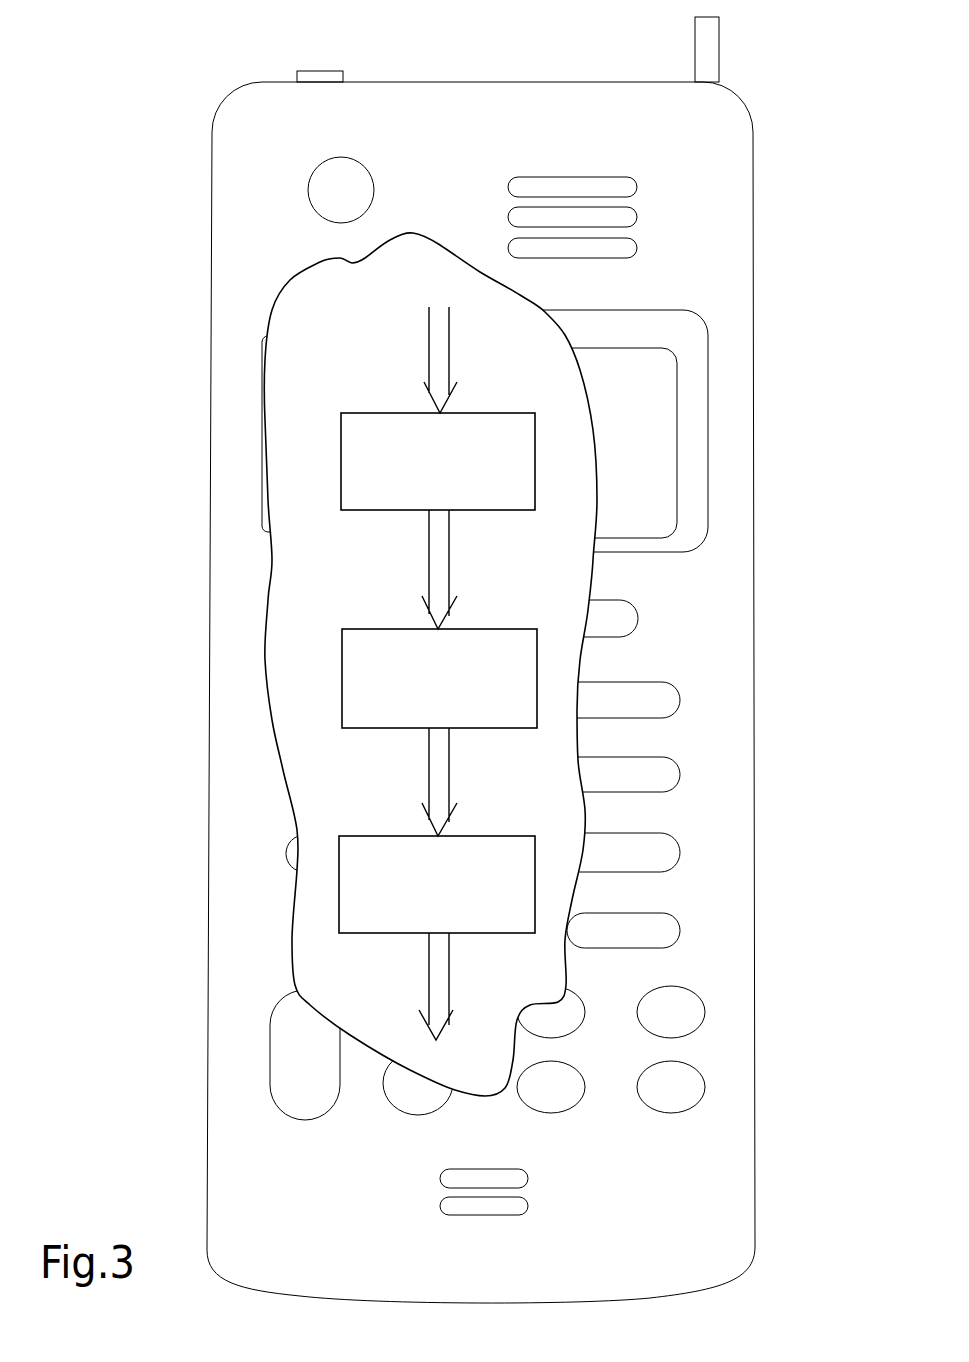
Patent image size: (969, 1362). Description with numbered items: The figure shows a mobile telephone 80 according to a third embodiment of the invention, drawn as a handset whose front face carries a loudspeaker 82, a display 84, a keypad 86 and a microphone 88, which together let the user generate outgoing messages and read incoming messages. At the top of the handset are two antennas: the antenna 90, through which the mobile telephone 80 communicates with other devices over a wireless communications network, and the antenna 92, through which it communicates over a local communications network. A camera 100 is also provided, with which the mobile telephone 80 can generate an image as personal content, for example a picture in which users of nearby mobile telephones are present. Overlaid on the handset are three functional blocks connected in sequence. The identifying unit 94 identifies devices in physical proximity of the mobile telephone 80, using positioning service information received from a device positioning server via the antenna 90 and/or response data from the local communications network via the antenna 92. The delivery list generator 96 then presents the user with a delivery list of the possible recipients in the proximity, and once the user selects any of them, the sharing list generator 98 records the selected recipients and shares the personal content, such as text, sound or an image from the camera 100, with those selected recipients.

The mobile telephone 80 is at (180, 128).
The loudspeaker 82 is at (650, 181).
The display 84 is at (708, 366).
The keypad 86 is at (684, 755).
The microphone 88 is at (542, 1173).
The antenna 90 is at (713, 47).
The antenna 92 is at (325, 80).
The identifying unit 94 is at (349, 442).
The delivery list generator 96 is at (350, 651).
The sharing list generator 98 is at (353, 858).
The camera 100 is at (358, 160).